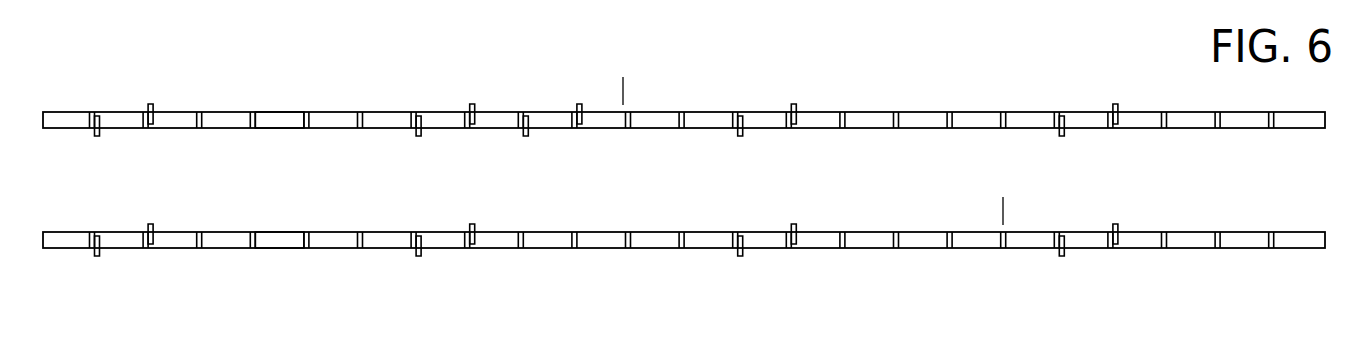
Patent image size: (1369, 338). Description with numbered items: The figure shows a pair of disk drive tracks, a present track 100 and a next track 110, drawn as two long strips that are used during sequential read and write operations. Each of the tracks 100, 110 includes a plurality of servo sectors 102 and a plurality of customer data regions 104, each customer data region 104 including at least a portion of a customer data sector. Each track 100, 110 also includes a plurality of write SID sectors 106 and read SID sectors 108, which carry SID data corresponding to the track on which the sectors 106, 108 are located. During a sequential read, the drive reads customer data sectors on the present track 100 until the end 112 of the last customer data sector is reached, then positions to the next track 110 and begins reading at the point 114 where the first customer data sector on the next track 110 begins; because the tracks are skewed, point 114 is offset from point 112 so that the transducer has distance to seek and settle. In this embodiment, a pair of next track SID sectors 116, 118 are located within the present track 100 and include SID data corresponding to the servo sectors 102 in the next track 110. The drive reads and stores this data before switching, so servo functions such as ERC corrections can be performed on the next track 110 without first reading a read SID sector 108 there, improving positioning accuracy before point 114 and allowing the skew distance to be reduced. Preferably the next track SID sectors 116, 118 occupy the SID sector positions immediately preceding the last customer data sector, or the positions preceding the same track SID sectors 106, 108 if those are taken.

The present track 100 is at (115, 88).
The next track 110 is at (115, 207).
The servo sector 102 is at (197, 112).
The customer data region 104 is at (276, 112).
The write SID sector 106 is at (417, 136).
The read SID sector 108 is at (470, 105).
The end of last customer data sector 112 is at (623, 92).
The starting point of first customer data sector 114 is at (1003, 210).
The next track SID sector 116 is at (523, 136).
The next track SID sector 118 is at (577, 105).